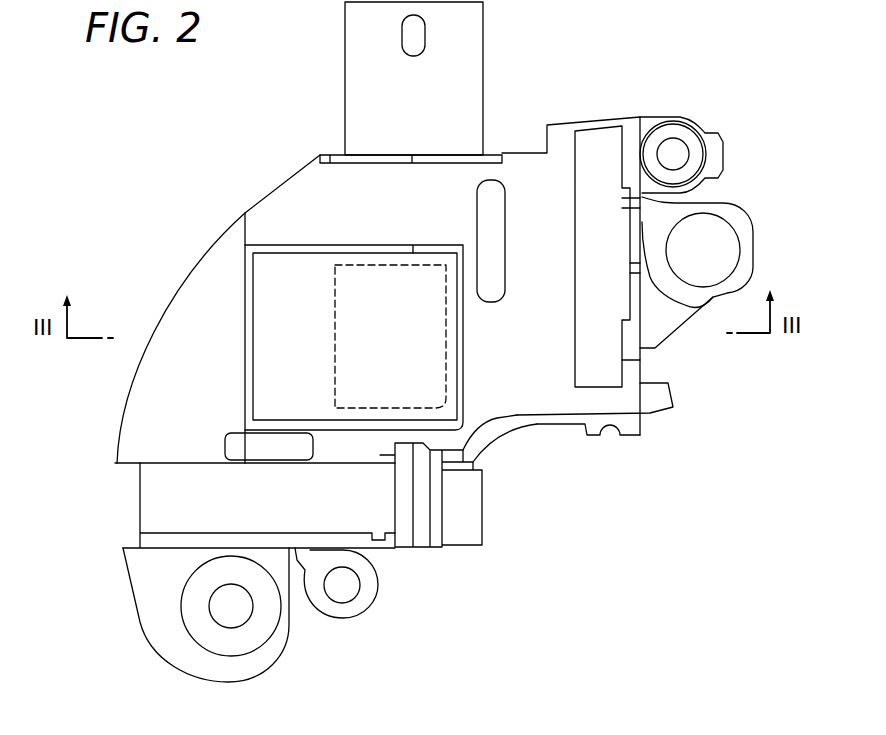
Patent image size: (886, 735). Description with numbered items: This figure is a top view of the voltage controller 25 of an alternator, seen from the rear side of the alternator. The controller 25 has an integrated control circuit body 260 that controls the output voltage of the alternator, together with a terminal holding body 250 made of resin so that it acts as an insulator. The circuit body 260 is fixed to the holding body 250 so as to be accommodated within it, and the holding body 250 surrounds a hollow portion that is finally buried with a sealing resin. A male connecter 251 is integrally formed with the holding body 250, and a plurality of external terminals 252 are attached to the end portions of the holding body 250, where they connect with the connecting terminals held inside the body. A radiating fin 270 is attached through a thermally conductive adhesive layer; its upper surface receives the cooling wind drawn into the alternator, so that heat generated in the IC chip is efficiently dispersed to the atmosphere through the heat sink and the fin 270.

The controller 25 is at (642, 57).
The terminal holding body 250 is at (195, 297).
The male connecter 251 is at (467, 41).
The external terminals 252 is at (681, 133).
The integrated control circuit body 260 is at (367, 283).
The radiating fin 270 is at (447, 407).